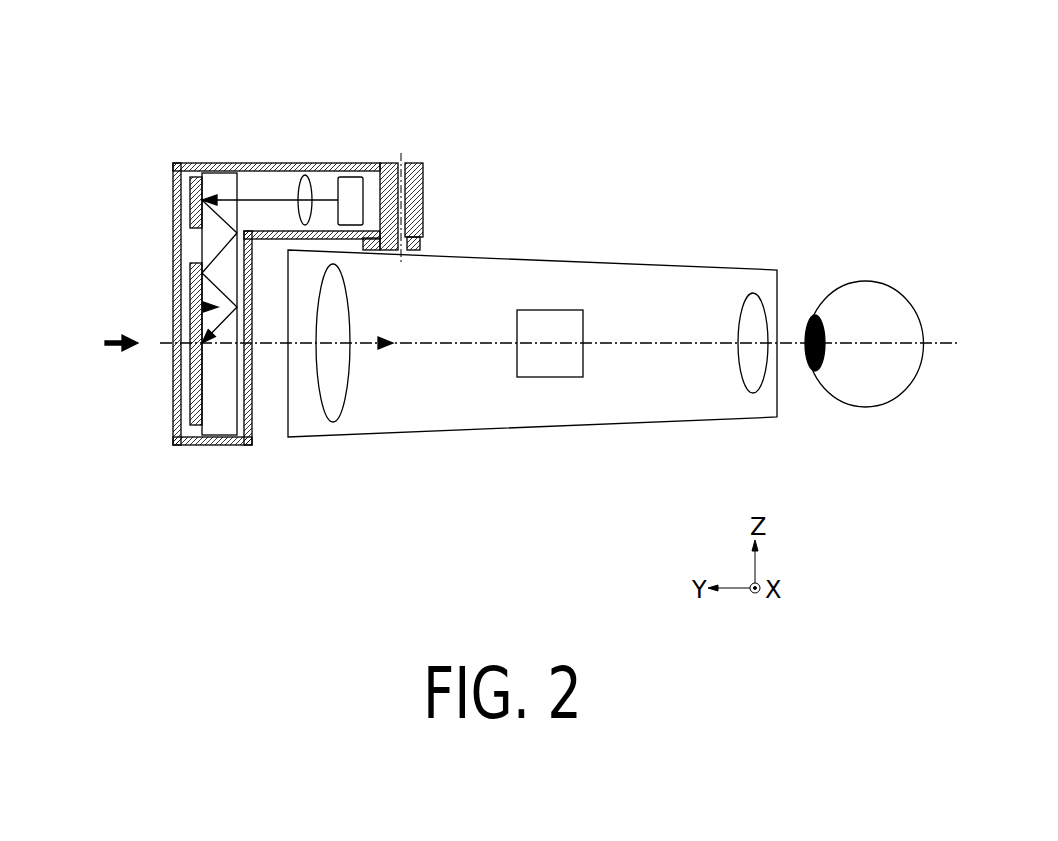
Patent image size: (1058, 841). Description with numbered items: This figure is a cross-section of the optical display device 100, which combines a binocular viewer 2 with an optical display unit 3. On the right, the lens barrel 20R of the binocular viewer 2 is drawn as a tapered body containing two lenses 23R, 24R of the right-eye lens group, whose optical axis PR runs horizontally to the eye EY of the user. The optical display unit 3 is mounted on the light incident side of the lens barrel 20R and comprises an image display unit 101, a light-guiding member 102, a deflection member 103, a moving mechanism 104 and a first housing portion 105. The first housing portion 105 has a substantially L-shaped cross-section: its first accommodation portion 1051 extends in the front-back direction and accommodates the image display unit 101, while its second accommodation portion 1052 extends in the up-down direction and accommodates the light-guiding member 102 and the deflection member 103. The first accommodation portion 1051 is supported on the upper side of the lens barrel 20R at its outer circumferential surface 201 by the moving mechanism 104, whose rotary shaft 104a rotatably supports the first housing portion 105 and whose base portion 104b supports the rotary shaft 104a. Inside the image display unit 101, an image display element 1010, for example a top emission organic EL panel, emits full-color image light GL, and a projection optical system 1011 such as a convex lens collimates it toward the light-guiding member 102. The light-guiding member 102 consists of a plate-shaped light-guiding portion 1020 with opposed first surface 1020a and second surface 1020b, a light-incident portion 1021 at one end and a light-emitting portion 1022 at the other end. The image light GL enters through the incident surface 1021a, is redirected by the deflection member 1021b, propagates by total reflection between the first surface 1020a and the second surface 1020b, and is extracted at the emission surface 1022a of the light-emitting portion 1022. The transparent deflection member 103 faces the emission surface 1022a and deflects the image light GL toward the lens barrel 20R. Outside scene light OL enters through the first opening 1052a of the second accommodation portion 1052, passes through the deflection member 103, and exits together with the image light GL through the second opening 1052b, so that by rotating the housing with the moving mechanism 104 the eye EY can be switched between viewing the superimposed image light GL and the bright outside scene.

The optical display device 100 is at (501, 287).
The binocular viewer 2 is at (501, 287).
The optical display unit 3 is at (184, 450).
The image display unit 101 is at (345, 245).
The image display element 1010 is at (348, 183).
The projection optical system 1011 is at (305, 177).
The light-guiding member 102 is at (258, 308).
The light-guiding portion 1020 is at (258, 308).
The first surface 1020a is at (238, 323).
The second surface 1020b is at (200, 240).
The light-incident portion 1021 is at (170, 168).
The incident surface 1021a is at (219, 216).
The deflection member 1021b is at (219, 253).
The light-emitting portion 1022 is at (334, 413).
The emission surface 1022a is at (219, 308).
The deflection member 103 is at (192, 403).
The moving mechanism 104 is at (486, 207).
The rotary shaft 104a is at (403, 180).
The base portion 104b is at (420, 247).
The first housing portion 105 is at (200, 277).
The first accommodation portion 1051 is at (287, 158).
The second accommodation portion 1052 is at (154, 347).
The first opening 1052a is at (180, 267).
The second opening 1052b is at (248, 410).
The outer circumferential surface 201 is at (365, 248).
The lens barrel 20R is at (560, 315).
The first lens 23R is at (389, 389).
The second lens 24R is at (777, 289).
The image light GL is at (368, 346).
The outside scene light OL is at (112, 352).
The optical axis PR is at (950, 342).
The eye EY is at (863, 395).